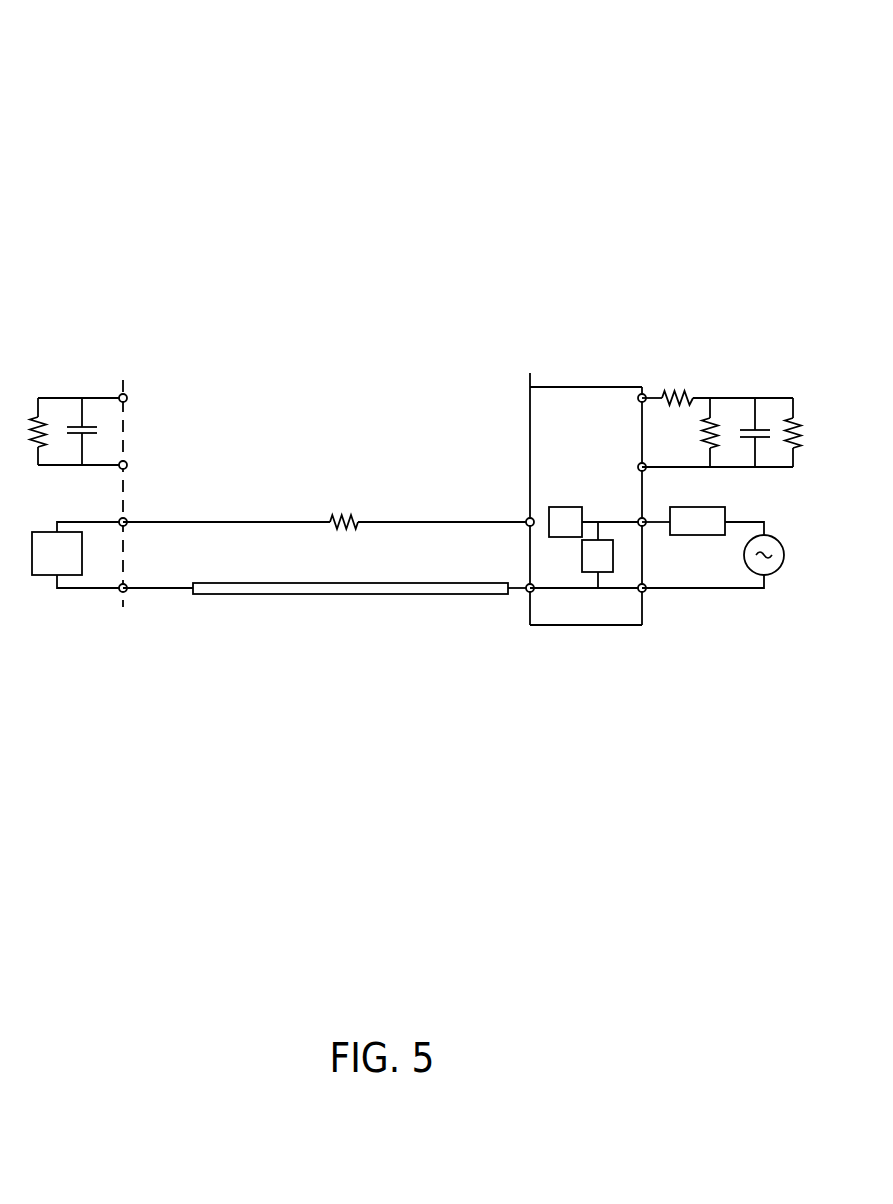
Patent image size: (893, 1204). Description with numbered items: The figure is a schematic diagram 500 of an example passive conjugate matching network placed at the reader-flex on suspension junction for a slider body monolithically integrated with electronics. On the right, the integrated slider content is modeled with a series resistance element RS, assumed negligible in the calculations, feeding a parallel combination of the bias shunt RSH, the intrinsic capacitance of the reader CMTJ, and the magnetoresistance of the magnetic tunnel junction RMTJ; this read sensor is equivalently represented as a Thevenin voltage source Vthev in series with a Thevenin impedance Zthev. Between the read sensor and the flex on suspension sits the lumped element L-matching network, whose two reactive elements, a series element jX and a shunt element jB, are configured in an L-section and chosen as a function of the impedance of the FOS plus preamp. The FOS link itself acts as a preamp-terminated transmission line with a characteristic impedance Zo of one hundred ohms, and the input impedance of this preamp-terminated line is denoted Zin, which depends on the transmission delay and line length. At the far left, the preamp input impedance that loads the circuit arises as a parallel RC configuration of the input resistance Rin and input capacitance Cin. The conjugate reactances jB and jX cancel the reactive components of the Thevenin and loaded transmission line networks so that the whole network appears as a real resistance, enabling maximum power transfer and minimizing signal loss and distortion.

The schematic diagram 500 is at (124, 52).
The preamp input resistance Rin is at (26, 431).
The preamp input capacitance Cin is at (75, 431).
The input impedance of the preamp-terminated FOS Zin is at (57, 553).
The characteristic impedance Zo is at (326, 554).
The series reactive element jX is at (565, 522).
The shunt reactive element jB is at (597, 555).
The series resistance element RS is at (667, 412).
The bias shunt RSH is at (691, 432).
The intrinsic capacitance of the reader CMTJ is at (741, 432).
The magnetoresistance of the magnetic tunnel junction RMTJ is at (779, 446).
The Thevenin impedance Zthev is at (697, 521).
The Thevenin voltage source Vthev is at (778, 560).